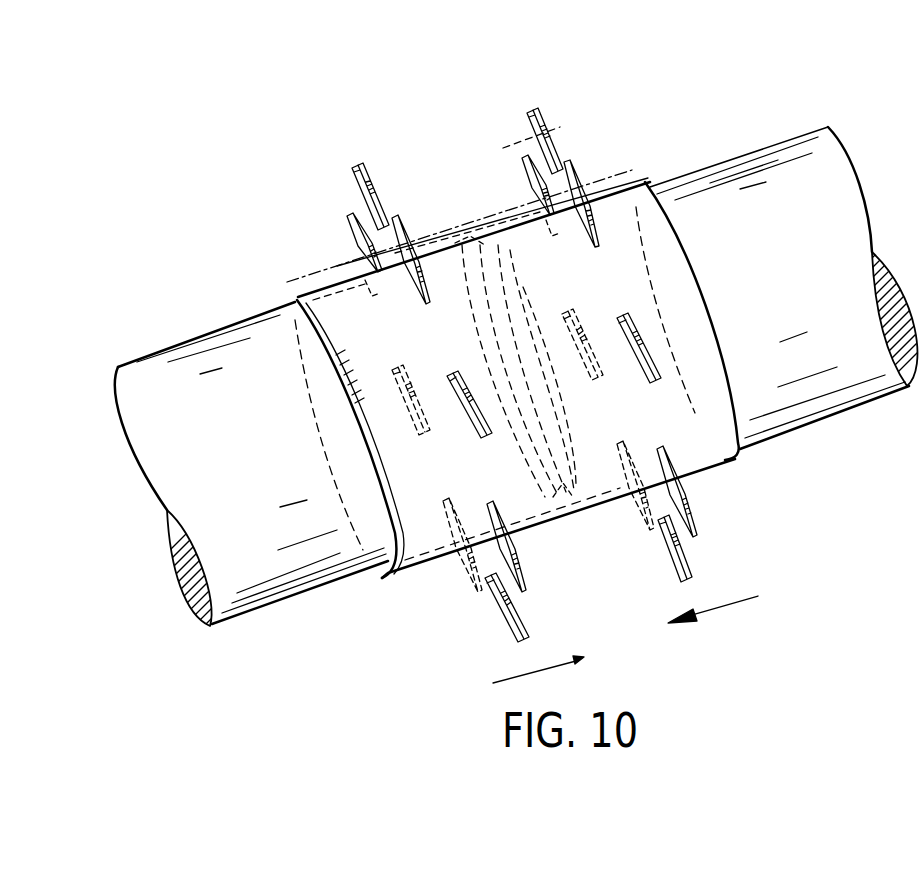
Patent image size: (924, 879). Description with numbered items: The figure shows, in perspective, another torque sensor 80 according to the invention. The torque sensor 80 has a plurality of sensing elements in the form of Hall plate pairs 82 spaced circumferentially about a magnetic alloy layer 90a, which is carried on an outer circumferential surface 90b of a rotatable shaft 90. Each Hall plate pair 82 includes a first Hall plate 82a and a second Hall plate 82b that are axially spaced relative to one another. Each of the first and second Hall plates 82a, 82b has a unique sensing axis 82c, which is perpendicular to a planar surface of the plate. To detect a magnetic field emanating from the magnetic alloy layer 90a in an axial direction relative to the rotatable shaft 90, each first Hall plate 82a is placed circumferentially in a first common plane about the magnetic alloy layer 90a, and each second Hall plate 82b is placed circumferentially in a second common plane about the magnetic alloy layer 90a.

The torque sensor 80 is at (318, 96).
The Hall plate pairs 82 is at (494, 175).
The first Hall plate 82a is at (348, 238).
The second Hall plate 82b is at (585, 160).
The sensing axis 82c is at (380, 214).
The rotatable shaft 90 is at (786, 114).
The magnetic alloy layer 90a is at (643, 175).
The outer circumferential surface 90b is at (713, 167).